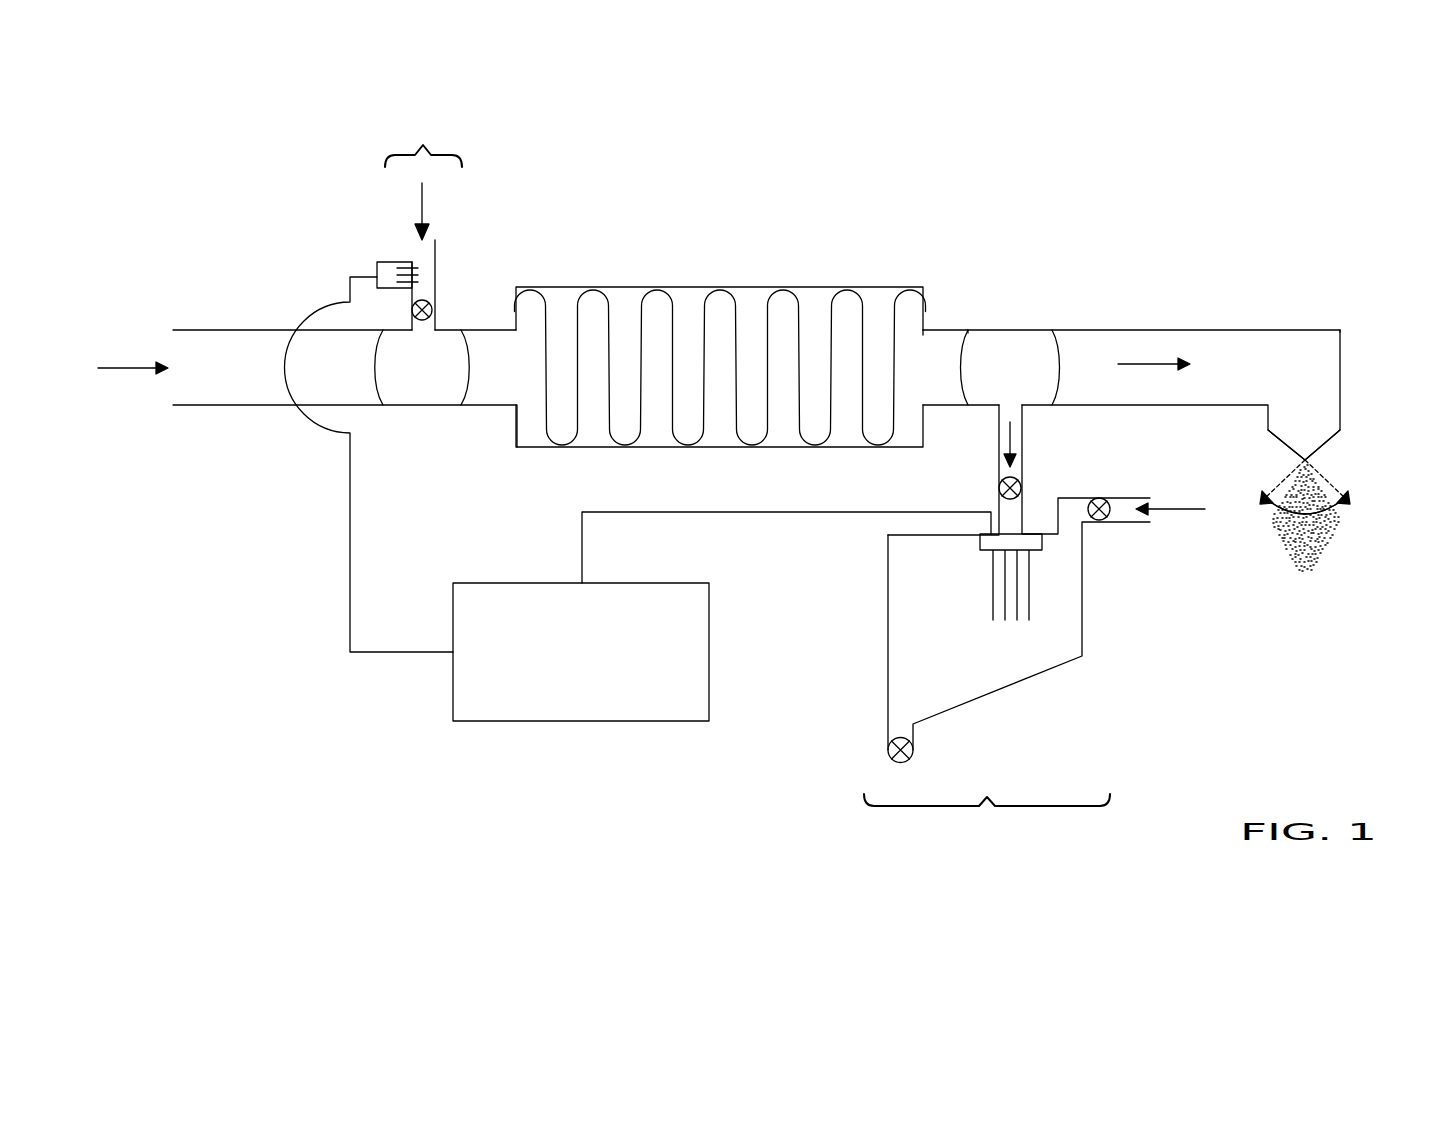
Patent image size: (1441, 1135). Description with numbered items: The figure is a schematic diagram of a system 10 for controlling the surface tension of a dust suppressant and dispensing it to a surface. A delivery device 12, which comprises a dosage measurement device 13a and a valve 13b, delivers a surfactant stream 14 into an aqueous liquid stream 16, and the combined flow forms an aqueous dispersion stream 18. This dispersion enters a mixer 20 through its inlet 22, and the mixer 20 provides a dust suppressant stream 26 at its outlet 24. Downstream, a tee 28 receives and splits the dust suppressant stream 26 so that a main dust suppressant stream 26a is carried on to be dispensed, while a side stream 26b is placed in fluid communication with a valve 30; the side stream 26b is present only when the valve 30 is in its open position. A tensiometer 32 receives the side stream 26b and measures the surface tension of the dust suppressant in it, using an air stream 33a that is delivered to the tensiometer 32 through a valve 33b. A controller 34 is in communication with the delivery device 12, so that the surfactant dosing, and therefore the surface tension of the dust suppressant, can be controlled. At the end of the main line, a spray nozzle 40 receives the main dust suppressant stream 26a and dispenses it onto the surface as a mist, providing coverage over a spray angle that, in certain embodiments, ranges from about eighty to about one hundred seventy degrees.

The system 10 is at (1185, 177).
The delivery device 12 is at (423, 145).
The dosage measurement device 13a is at (388, 262).
The valve 13b is at (432, 310).
The surfactant stream 14 is at (425, 247).
The aqueous liquid stream 16 is at (170, 381).
The aqueous dispersion stream 18 is at (488, 370).
The mixer 20 is at (805, 287).
The inlet 22 is at (520, 372).
The outlet 24 is at (922, 363).
The dust suppressant stream 26 is at (952, 367).
The main dust suppressant stream 26a is at (1147, 360).
The side stream 26b is at (999, 440).
The tee 28 is at (1015, 367).
The valve 30 is at (1023, 489).
The tensiometer 32 is at (987, 807).
The air stream 33a is at (1177, 512).
The valve 33b is at (1100, 520).
The controller 34 is at (603, 724).
The spray nozzle 40 is at (1312, 461).